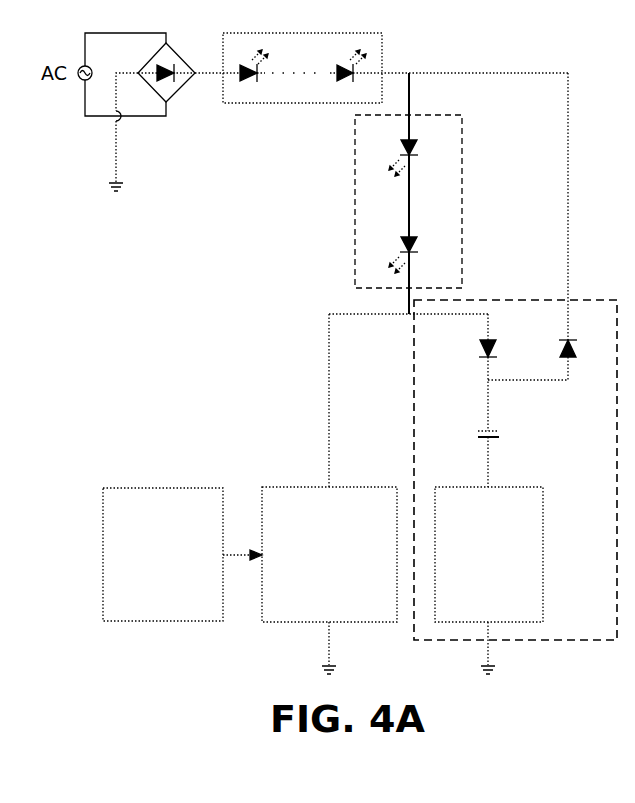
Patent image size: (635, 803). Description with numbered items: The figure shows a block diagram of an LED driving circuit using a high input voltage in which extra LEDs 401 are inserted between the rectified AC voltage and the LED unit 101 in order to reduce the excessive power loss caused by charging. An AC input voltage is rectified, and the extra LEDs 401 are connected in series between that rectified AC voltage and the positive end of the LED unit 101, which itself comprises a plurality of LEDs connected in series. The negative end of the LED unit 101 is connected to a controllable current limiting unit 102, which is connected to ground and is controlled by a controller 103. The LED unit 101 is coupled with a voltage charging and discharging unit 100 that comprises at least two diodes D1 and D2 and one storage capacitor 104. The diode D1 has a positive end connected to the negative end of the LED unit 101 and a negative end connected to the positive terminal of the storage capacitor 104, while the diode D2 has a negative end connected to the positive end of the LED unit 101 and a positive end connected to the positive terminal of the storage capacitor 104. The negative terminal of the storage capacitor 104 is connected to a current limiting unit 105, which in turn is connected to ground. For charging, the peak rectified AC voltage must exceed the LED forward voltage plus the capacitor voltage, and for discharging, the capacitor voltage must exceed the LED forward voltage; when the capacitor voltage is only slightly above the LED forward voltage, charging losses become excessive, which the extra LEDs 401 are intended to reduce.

The extra LEDs 401 is at (383, 50).
The LED unit 101 is at (355, 212).
The voltage charging and discharging unit 100 is at (543, 300).
The controllable current limiting unit 102 is at (290, 487).
The controller 103 is at (163, 488).
The storage capacitor 104 is at (475, 424).
The current limiting unit 105 is at (543, 521).
The diode D1 is at (472, 353).
The diode D2 is at (583, 353).